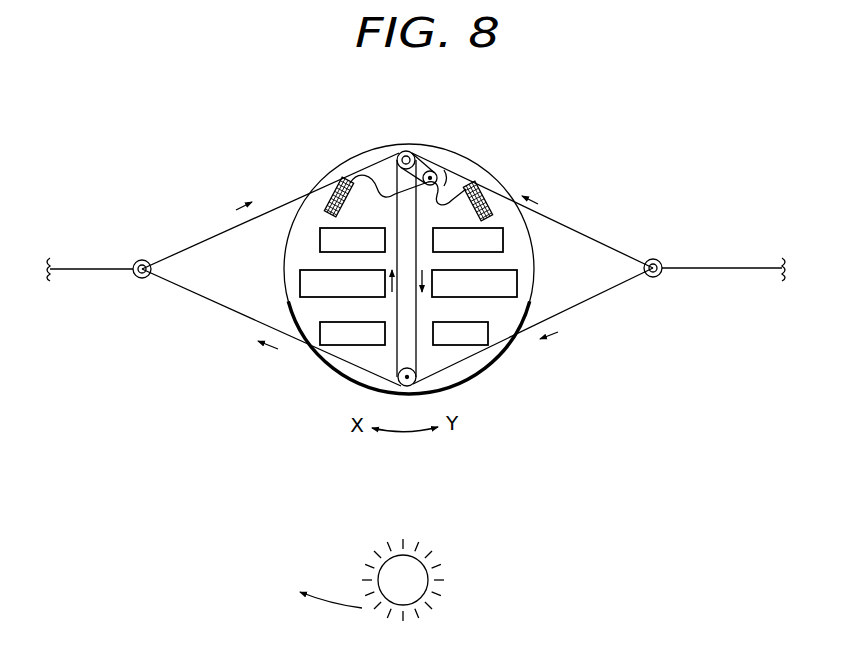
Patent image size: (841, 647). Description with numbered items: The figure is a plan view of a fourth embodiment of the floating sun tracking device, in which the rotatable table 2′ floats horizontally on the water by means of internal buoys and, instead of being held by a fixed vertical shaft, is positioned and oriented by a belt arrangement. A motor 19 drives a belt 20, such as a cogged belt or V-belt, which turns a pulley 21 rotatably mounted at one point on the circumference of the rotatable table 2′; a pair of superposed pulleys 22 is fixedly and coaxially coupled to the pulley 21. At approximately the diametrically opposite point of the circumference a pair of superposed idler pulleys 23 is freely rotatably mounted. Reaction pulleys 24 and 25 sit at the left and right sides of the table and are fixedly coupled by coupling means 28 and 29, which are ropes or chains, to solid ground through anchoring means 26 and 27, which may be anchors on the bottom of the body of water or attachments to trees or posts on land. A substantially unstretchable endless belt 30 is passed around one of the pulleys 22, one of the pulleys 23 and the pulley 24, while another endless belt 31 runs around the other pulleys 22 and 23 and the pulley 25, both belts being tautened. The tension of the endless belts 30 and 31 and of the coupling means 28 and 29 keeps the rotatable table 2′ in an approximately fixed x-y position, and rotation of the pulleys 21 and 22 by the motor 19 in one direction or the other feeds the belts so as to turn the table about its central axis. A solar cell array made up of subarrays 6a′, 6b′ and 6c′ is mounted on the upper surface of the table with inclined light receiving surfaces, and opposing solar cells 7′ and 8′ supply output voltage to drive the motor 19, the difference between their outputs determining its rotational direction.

The rotatable table 2′ is at (511, 348).
The solar cell subarray 6a′ is at (317, 323).
The solar cell subarray 6b′ is at (302, 277).
The solar cell subarray 6c′ is at (327, 236).
The solar cell 7′ is at (338, 182).
The solar cell 8′ is at (484, 185).
The motor 19 is at (440, 182).
The belt 20 is at (431, 171).
The pulley 21 is at (403, 151).
The pair of pulleys 22 is at (398, 166).
The pair of idler pulleys 23 is at (398, 385).
The reaction pulley 24 is at (142, 259).
The reaction pulley 25 is at (653, 259).
The anchoring means 26 is at (50, 262).
The anchoring means 27 is at (782, 262).
The coupling means 28 is at (90, 269).
The coupling means 29 is at (698, 268).
The endless belt 30 is at (222, 306).
The endless belt 31 is at (585, 301).